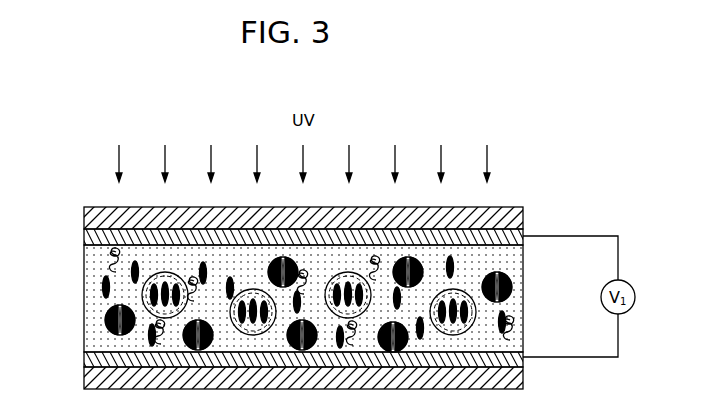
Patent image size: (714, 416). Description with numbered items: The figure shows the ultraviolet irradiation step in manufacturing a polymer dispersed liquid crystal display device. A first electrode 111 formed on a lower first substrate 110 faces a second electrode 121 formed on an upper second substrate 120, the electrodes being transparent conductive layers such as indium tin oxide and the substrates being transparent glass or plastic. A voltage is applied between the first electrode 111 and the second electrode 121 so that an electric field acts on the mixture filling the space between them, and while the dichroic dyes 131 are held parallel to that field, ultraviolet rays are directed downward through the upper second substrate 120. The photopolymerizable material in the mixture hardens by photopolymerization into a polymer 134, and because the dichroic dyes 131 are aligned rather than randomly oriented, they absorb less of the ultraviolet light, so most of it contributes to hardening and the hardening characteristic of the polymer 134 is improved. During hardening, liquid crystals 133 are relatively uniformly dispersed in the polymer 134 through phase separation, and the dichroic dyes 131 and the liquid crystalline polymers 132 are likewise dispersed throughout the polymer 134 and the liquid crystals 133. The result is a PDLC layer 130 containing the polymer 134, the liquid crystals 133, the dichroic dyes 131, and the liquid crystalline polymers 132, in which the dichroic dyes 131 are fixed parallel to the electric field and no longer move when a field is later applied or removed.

The first substrate 110 is at (90, 378).
The first electrode 111 is at (88, 358).
The second substrate 120 is at (90, 212).
The second electrode 121 is at (88, 237).
The PDLC layer 130 is at (308, 298).
The dichroic dyes 131 is at (103, 285).
The liquid crystalline polymers 132 is at (112, 256).
The liquid crystals 133 is at (105, 320).
The polymer 134 is at (95, 340).